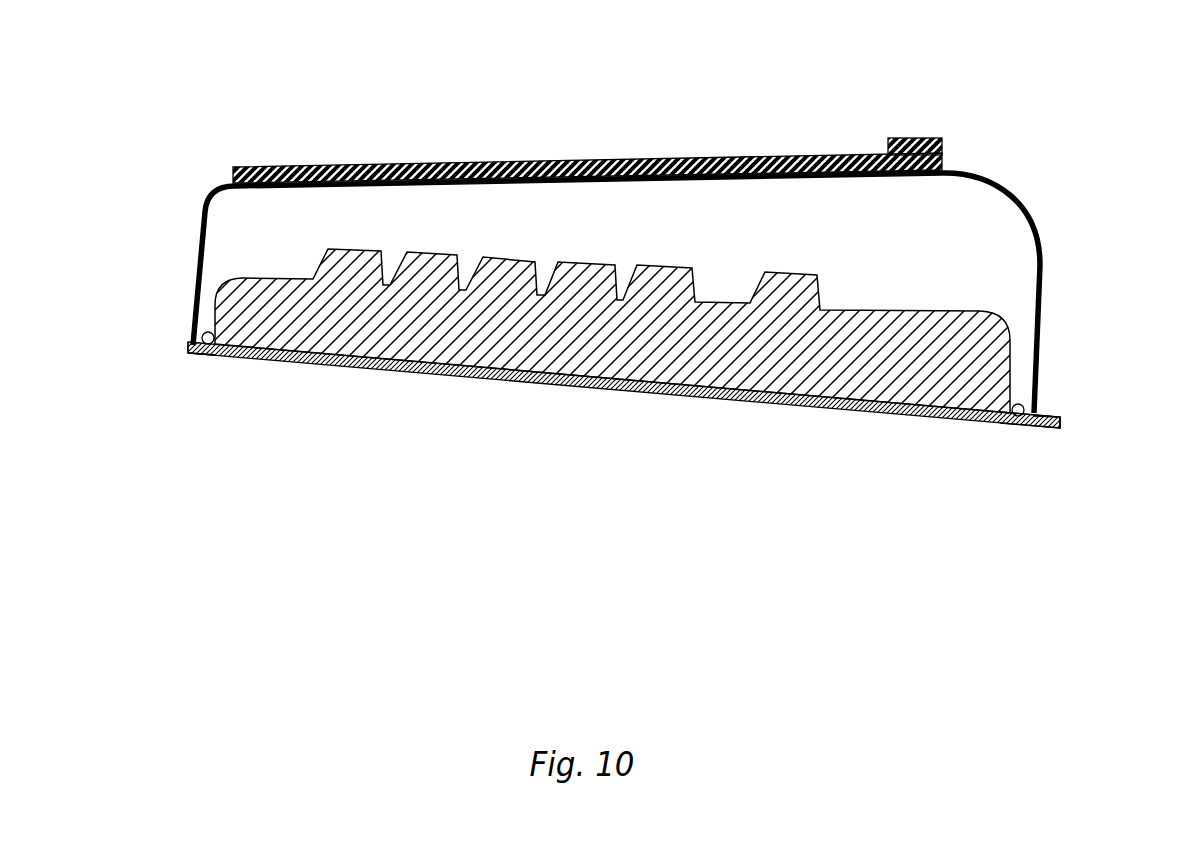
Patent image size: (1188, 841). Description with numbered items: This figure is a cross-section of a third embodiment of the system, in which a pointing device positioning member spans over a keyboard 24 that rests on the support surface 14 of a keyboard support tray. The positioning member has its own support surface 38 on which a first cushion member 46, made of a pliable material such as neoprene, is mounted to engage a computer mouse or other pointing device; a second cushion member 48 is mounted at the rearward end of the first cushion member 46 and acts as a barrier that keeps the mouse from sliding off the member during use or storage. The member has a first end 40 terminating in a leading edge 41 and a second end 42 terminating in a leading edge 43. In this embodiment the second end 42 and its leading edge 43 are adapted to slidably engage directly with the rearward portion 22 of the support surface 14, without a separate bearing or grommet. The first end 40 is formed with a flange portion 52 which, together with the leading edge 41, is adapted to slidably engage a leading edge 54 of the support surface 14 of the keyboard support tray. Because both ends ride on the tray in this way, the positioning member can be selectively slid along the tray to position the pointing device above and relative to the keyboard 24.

The support surface 14 is at (748, 401).
The rearward portion 22 is at (1007, 412).
The keyboard 24 is at (620, 343).
The support surface 38 is at (577, 185).
The first end 40 is at (190, 308).
The leading edge 41 is at (190, 358).
The second end 42 is at (1037, 380).
The leading edge 43 is at (1037, 410).
The first cushion member 46 is at (756, 166).
The second cushion member 48 is at (920, 138).
The flange portion 52 is at (221, 352).
The leading edge 54 is at (189, 362).